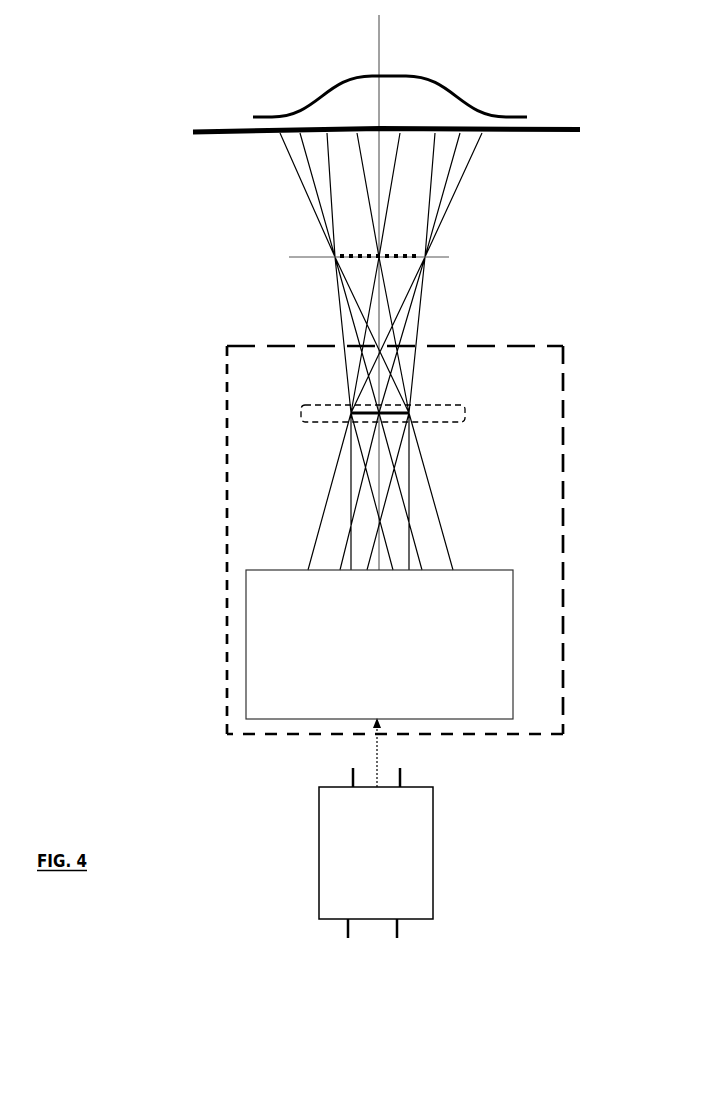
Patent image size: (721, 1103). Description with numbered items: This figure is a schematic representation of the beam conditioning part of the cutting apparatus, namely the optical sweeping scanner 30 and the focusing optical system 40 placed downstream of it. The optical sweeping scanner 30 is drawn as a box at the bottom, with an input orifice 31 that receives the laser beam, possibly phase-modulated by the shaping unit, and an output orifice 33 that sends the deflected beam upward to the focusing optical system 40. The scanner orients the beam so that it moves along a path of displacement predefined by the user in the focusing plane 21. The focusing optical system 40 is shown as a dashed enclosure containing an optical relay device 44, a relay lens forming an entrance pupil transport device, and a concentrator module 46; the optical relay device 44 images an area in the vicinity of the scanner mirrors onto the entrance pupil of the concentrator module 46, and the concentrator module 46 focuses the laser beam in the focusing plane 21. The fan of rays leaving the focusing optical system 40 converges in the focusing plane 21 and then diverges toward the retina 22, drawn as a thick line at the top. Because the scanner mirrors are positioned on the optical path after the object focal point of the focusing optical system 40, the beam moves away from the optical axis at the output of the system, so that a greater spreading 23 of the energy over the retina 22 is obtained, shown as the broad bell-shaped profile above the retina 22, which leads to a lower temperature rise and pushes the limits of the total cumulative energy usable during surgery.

The focusing plane 21 is at (443, 257).
The retina 22 is at (575, 130).
The spreading of the energy 23 is at (443, 89).
The optical sweeping scanner 30 is at (318, 860).
The input orifice 31 is at (397, 928).
The output orifice 33 is at (400, 787).
The focusing optical system 40 is at (563, 632).
The optical relay device 44 is at (246, 603).
The concentrator module 46 is at (465, 406).